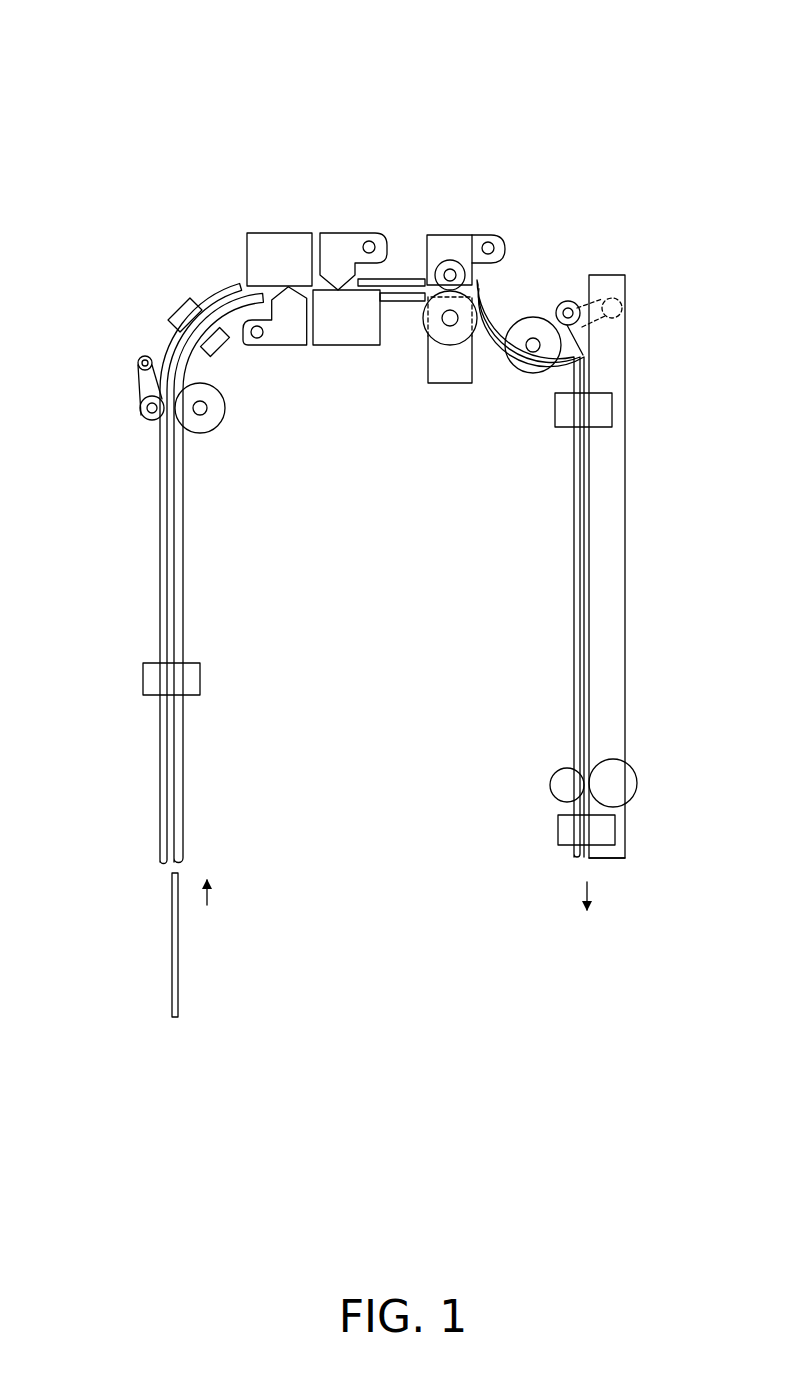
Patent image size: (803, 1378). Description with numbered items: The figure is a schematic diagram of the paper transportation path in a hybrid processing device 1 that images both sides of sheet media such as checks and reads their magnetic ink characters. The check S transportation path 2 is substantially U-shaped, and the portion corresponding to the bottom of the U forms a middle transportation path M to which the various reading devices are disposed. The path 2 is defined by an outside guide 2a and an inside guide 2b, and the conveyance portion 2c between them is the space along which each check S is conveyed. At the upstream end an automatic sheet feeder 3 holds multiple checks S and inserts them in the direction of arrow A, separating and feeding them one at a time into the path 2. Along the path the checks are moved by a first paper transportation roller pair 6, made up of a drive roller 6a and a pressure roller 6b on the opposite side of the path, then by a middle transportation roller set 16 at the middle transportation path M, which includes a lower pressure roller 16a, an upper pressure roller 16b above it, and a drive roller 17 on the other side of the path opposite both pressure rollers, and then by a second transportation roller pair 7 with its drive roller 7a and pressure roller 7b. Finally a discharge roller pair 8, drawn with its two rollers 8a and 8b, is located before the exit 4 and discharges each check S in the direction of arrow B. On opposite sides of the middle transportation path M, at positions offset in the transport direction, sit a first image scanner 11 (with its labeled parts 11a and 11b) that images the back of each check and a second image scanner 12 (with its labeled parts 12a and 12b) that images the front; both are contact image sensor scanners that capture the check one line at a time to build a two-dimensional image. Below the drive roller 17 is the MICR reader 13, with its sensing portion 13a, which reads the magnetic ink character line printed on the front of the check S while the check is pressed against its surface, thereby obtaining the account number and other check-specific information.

The hybrid processing device 1 is at (541, 114).
The paper transportation path 2 is at (68, 492).
The outside guide 2a is at (163, 495).
The inside guide 2b is at (178, 548).
The conveyance portion 2c is at (172, 518).
The automatic sheet feeder 3 is at (200, 645).
The exit 4 is at (596, 876).
The first paper transportation roller pair 6 is at (310, 432).
The drive roller 6a is at (218, 410).
The pressure roller 6b is at (160, 432).
The second transportation roller pair 7 is at (555, 440).
The drive roller 7a is at (525, 365).
The pressure roller 7b is at (572, 330).
The discharge roller pair 8 is at (705, 800).
The discharge roller 8a is at (573, 808).
The discharge roller 8b is at (637, 788).
The first image scanner 11 is at (280, 245).
The magnetic head 11a is at (290, 343).
The magnetic head 11b is at (289, 353).
The second image scanner 12 is at (357, 348).
The print head 12a is at (342, 250).
The print head 12b is at (346, 223).
The MICR reader 13 is at (445, 385).
The platen roller 13a is at (494, 300).
The middle transportation roller set 16 is at (392, 150).
The lower pressure roller 16a is at (448, 258).
The upper pressure roller 16b is at (450, 275).
The drive roller 17 is at (488, 243).
The middle transportation path M is at (503, 292).
The check S is at (178, 965).
The insertion direction arrow A is at (217, 894).
The discharge direction arrow B is at (573, 893).